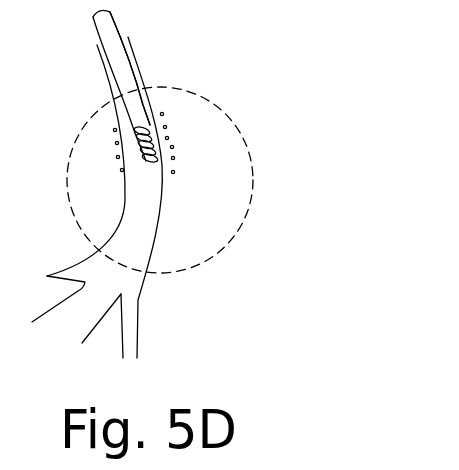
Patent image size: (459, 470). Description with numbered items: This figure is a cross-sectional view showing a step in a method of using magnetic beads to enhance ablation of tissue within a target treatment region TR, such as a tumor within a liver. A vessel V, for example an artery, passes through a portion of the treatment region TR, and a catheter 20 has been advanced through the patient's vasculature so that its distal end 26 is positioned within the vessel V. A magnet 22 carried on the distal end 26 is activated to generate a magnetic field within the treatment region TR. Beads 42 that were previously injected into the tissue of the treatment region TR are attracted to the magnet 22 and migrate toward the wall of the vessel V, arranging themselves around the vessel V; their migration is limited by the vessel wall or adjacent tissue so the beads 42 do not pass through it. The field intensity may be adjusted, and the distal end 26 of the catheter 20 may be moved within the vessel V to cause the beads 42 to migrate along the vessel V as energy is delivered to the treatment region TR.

The catheter 20 is at (139, 60).
The distal end 26 is at (147, 104).
The magnet 22 is at (156, 142).
The beads 42 is at (172, 158).
The treatment region TR is at (218, 248).
The vessel V is at (140, 295).